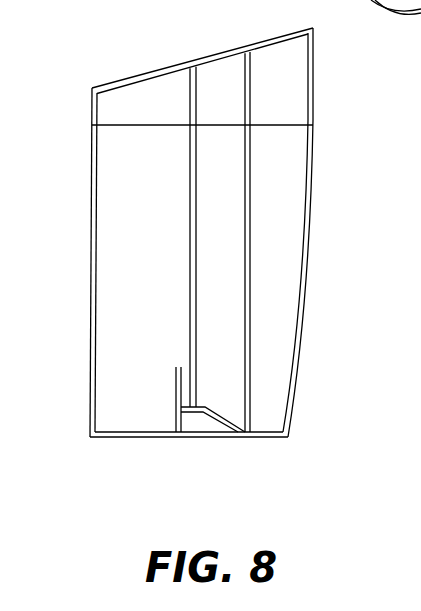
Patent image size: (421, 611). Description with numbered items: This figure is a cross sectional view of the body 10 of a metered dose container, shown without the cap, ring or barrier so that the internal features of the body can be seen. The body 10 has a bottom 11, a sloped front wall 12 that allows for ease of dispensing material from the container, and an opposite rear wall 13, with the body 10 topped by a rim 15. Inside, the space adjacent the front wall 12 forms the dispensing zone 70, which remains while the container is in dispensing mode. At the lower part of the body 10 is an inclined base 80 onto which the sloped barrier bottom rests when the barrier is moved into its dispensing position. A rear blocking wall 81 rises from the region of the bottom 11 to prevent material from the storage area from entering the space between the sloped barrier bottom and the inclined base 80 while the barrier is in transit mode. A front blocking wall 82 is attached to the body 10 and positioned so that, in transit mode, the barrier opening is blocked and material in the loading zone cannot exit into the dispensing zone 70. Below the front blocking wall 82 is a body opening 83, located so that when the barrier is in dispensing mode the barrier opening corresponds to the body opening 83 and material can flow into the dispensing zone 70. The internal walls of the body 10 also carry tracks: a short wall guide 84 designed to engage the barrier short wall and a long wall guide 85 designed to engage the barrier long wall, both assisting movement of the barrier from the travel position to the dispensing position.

The body 10 is at (60, 200).
The bottom 11 is at (240, 440).
The front wall 12 is at (305, 300).
The rear wall 13 is at (92, 293).
The rim 15 is at (92, 125).
The dispensing zone 70 is at (287, 261).
The inclined base 80 is at (212, 440).
The rear blocking wall 81 is at (178, 388).
The front blocking wall 82 is at (250, 358).
The body opening 83 is at (248, 412).
The short wall guide 84 is at (196, 220).
The long wall guide 85 is at (250, 178).